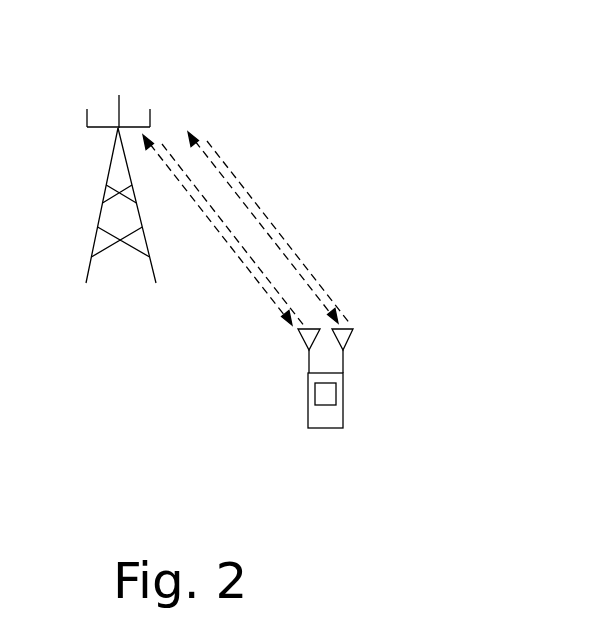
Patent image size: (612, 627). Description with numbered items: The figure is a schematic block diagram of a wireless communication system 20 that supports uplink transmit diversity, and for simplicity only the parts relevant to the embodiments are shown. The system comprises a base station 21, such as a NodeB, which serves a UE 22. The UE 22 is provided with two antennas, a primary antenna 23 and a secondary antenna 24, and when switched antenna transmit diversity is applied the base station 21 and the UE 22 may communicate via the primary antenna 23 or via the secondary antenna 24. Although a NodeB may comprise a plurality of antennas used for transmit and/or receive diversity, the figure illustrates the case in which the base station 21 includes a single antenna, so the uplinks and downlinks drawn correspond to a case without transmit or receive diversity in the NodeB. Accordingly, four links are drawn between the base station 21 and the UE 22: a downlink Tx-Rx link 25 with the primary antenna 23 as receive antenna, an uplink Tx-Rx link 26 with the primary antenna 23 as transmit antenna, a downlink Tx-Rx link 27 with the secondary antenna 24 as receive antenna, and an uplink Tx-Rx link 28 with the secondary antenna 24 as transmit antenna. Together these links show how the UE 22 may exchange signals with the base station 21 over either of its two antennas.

The wireless communication system 20 is at (247, 73).
The base station 21 is at (110, 112).
The UE 22 is at (332, 430).
The primary antenna 23 is at (300, 342).
The secondary antenna 24 is at (345, 349).
The downlink Tx-Rx link 25 is at (270, 293).
The uplink Tx-Rx link 26 is at (253, 262).
The downlink Tx-Rx link 27 is at (293, 258).
The uplink Tx-Rx link 28 is at (273, 230).